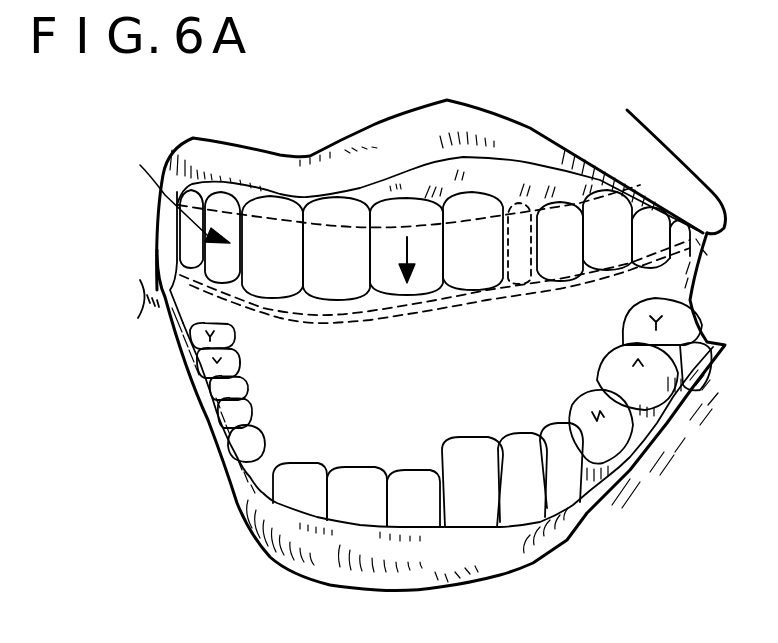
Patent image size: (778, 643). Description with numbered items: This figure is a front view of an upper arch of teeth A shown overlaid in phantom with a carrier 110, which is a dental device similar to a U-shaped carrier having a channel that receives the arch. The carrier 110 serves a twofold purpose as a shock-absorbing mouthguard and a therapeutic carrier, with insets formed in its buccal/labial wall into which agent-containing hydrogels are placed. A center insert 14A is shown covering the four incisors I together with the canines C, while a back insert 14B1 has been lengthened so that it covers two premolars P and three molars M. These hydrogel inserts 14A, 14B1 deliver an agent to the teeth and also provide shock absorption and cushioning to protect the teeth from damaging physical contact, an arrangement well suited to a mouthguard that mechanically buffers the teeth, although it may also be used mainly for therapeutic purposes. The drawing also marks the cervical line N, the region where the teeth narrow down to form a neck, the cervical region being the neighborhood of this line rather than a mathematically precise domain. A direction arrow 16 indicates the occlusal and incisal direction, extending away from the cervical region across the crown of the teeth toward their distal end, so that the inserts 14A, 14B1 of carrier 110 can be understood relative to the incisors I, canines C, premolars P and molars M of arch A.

The upper arch of teeth A is at (140, 165).
The cervical line N is at (463, 192).
The incisors I is at (380, 262).
The direction arrow 16 is at (380, 265).
The carrier 110 is at (388, 325).
The center insert 14A is at (433, 320).
The canines C is at (483, 290).
The back insert 14B1 is at (517, 270).
The premolars P is at (543, 260).
The molars M is at (657, 245).